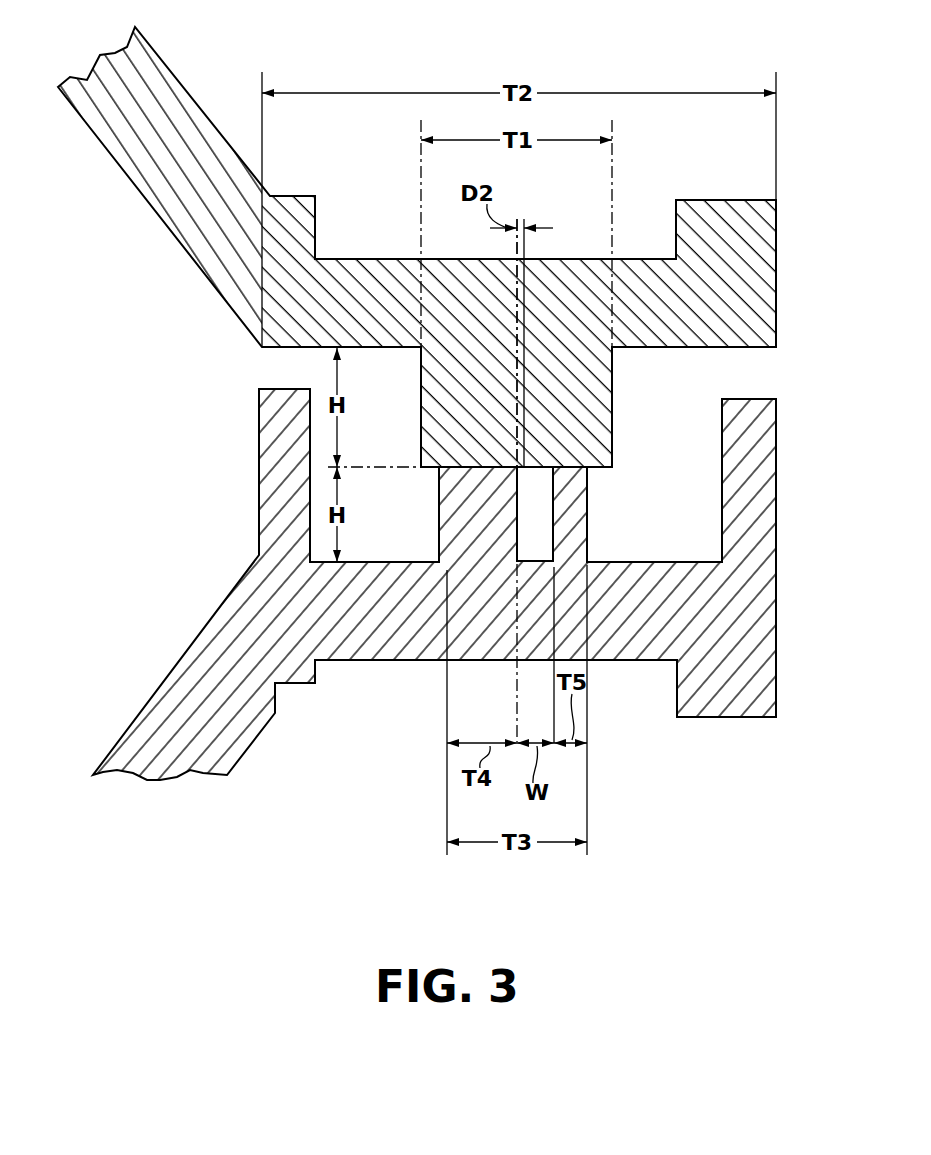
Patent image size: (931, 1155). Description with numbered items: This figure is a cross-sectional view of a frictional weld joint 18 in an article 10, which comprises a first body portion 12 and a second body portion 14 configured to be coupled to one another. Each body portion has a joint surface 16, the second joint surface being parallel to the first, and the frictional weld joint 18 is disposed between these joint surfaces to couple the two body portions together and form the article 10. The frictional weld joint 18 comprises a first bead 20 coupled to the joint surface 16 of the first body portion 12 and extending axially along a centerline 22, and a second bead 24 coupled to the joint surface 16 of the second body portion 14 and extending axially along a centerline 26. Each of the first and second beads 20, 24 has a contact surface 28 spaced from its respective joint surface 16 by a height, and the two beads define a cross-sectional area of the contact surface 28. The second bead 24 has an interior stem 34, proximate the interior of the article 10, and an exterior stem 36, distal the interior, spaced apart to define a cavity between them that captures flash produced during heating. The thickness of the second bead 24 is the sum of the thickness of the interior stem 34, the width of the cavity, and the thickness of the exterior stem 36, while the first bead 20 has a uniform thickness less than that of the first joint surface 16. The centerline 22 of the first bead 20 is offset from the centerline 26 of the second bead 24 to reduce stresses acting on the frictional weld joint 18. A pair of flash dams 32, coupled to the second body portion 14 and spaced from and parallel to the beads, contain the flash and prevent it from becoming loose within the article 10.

The article 10 is at (206, 66).
The first body portion 12 is at (108, 200).
The second body portion 14 is at (108, 724).
The joint surface 16 is at (763, 347).
The frictional weld joint 18 is at (645, 434).
The first bead 20 is at (597, 377).
The centerline 22 is at (515, 700).
The second bead 24 is at (600, 549).
The centerline 26 is at (516, 255).
The contact surface 28 is at (452, 465).
The flash dams 32 is at (270, 452).
The interior stem 34 is at (448, 537).
The exterior stem 36 is at (563, 499).